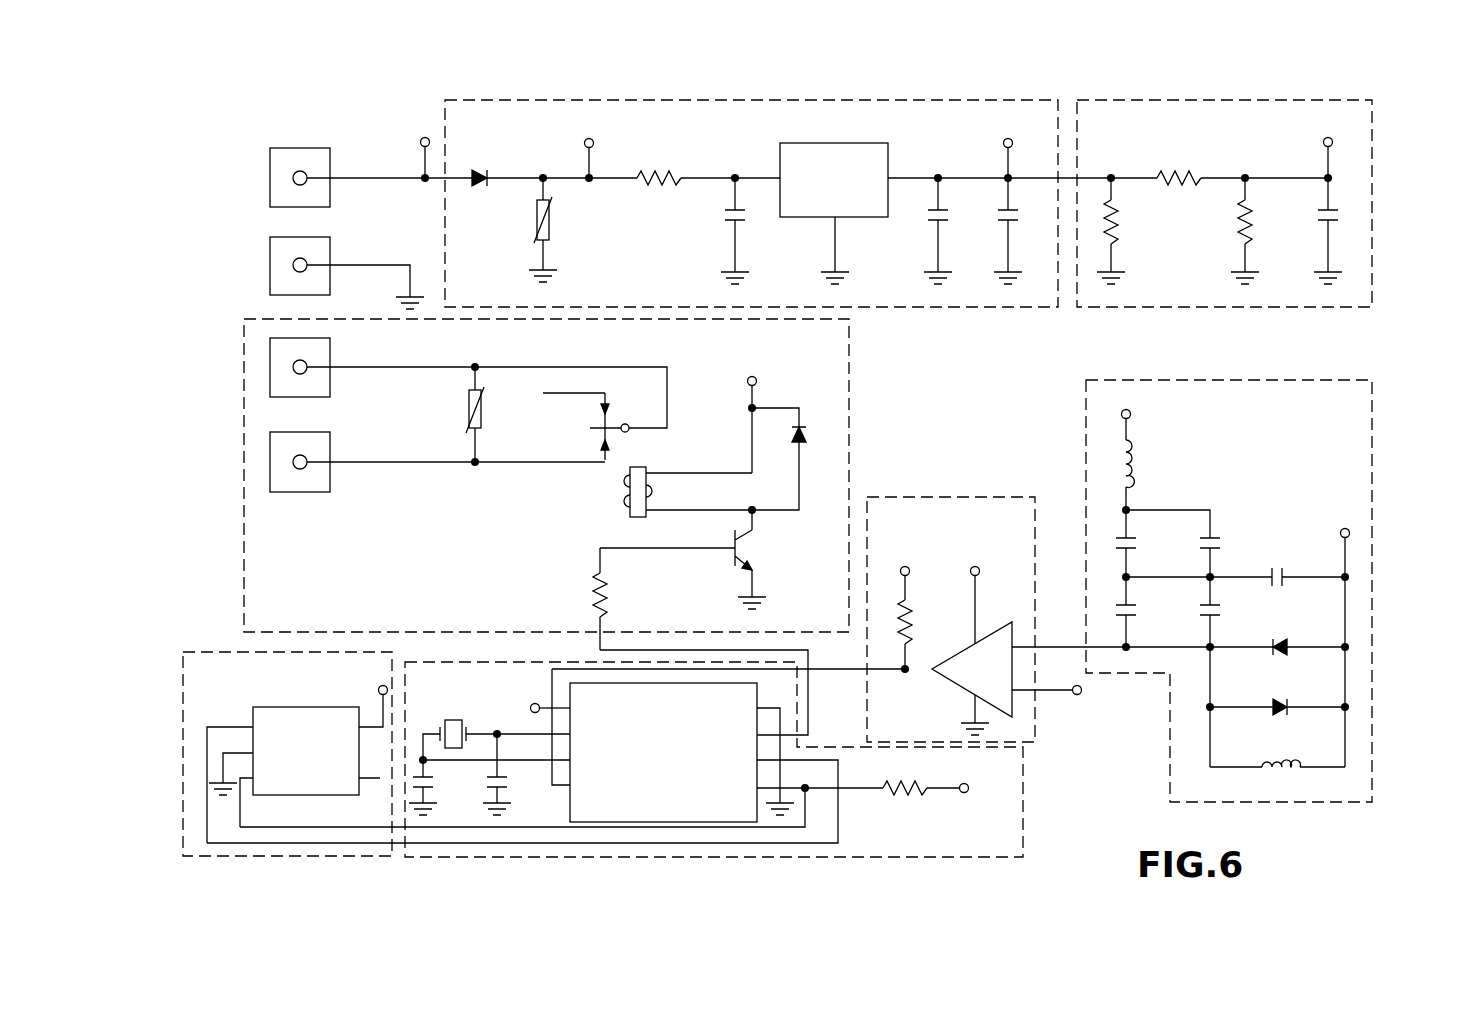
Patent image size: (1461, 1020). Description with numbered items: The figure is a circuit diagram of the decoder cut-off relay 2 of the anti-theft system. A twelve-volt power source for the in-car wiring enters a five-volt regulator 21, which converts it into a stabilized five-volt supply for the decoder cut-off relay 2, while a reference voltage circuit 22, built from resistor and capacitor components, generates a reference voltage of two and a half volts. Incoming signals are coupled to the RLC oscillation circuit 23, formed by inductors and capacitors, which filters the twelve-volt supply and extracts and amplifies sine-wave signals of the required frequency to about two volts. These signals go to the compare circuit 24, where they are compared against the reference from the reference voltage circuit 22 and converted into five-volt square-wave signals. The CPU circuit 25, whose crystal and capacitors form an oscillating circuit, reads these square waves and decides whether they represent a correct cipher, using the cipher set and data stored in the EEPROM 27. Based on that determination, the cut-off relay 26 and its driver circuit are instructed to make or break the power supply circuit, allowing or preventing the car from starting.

The decoder cut-off relay 2 is at (200, 347).
The 5V regulator 21 is at (863, 125).
The reference voltage circuit 22 is at (1365, 148).
The RLC oscillation circuit 23 is at (1355, 412).
The compare circuit 24 is at (992, 518).
The CPU circuit 25 is at (1007, 817).
The cut-off relay 26 is at (290, 527).
The EEPROM 27 is at (228, 848).